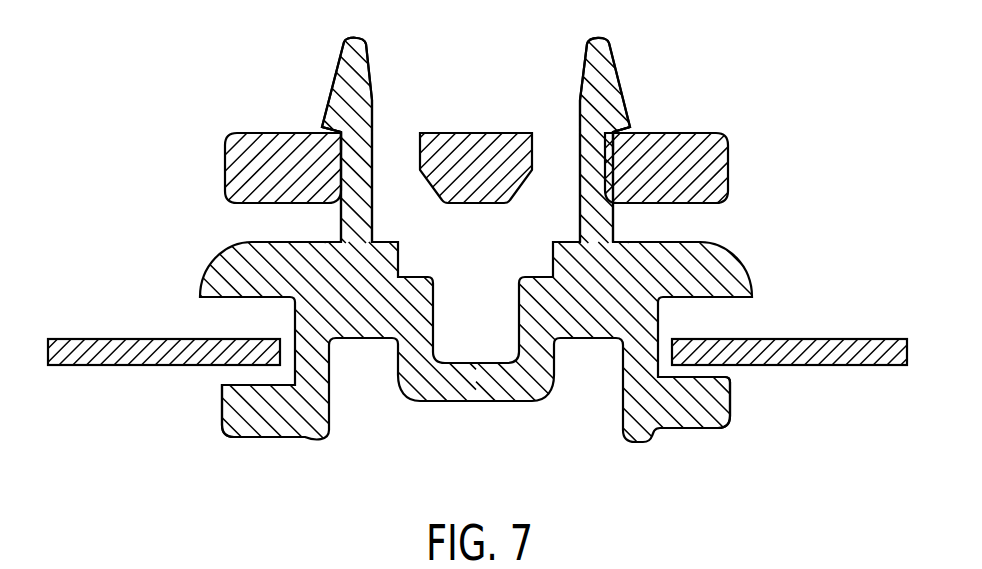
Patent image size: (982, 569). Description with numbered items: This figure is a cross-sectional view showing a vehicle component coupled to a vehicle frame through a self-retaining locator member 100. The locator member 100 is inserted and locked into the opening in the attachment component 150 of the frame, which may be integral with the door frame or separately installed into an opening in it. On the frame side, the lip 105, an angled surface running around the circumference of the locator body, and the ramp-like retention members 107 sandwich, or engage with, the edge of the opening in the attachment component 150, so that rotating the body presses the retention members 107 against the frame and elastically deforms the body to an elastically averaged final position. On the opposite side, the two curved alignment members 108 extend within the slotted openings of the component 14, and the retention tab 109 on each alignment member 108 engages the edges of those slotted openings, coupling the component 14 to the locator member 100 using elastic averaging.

The self-retaining locator member 100 is at (440, 267).
The lip 105 is at (718, 263).
The retention member 107 is at (252, 435).
The alignment member 108 is at (353, 62).
The retention tab 109 is at (340, 112).
The component 14 is at (252, 158).
The attachment component 150 is at (137, 357).